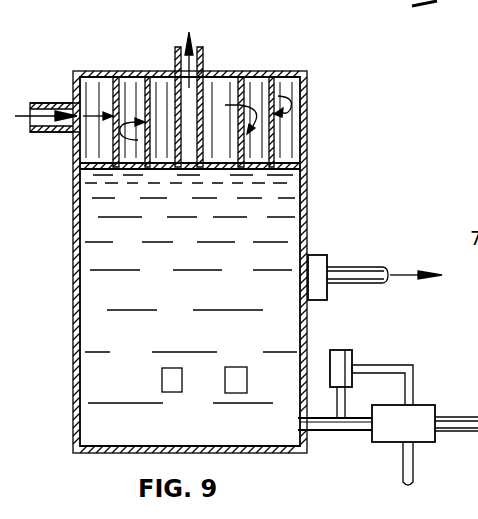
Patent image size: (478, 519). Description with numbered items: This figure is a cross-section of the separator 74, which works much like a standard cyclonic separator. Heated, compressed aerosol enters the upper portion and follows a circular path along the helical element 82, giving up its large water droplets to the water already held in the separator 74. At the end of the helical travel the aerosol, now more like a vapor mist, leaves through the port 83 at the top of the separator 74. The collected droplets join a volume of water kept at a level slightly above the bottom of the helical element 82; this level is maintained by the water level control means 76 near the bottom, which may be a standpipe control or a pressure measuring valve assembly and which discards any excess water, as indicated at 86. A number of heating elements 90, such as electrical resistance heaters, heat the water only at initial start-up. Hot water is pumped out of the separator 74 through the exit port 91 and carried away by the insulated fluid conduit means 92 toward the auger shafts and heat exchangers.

The separator 74 is at (64, 376).
The water level control means 76 is at (430, 441).
The helical element 82 is at (244, 80).
The port 83 is at (203, 52).
The excess water vent 86 is at (405, 474).
The heating elements 90 is at (172, 393).
The exit port 91 is at (316, 259).
The insulated fluid conduit means 92 is at (375, 267).